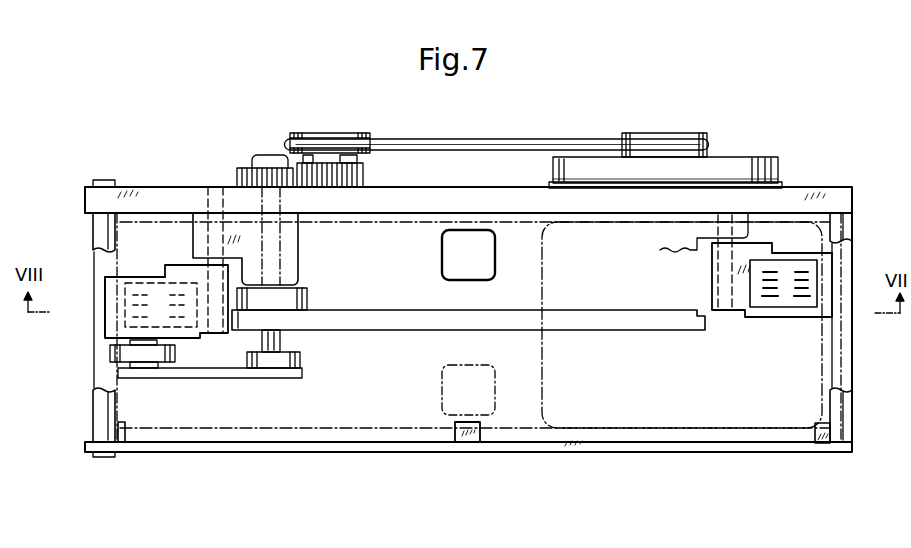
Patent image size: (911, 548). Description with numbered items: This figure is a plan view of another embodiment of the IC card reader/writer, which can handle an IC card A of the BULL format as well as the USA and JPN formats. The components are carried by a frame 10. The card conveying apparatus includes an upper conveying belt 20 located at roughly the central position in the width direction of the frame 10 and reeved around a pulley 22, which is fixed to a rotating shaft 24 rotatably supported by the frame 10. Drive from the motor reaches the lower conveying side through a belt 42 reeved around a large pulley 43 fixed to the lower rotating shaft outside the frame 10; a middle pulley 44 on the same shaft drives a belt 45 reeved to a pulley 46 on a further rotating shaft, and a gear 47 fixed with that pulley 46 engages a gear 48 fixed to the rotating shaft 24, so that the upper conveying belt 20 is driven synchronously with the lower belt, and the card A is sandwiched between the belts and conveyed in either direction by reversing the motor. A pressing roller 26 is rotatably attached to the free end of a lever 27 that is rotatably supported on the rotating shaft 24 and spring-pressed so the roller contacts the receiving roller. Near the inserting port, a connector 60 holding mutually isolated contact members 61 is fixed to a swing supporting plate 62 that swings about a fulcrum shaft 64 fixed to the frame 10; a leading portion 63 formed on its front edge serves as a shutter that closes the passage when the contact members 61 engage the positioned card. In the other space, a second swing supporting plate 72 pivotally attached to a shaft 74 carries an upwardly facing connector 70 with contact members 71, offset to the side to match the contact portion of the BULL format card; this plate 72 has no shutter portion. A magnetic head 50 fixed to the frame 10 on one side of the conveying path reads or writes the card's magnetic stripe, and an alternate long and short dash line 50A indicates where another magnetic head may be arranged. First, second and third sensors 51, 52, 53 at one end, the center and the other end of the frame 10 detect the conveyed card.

The frame 10 is at (872, 182).
The upper conveying belt 20 is at (606, 324).
The pulley 22 is at (309, 301).
The rotating shaft 24 is at (285, 259).
The pressing roller 26 is at (158, 368).
The lever 27 is at (238, 378).
The belt 42 is at (744, 160).
The large pulley 43 is at (784, 185).
The middle pulley 44 is at (689, 134).
The belt 45 is at (511, 140).
The pulley 46 is at (350, 133).
The gear 47 is at (365, 176).
The gear 48 is at (250, 168).
The magnetic head 50 is at (495, 256).
The another magnetic head 50A is at (442, 395).
The first sensor 51 is at (126, 438).
The second sensor 52 is at (455, 432).
The third sensor 53 is at (820, 428).
The connector 60 is at (186, 283).
The contact members 61 is at (145, 283).
The swing supporting plate 62 is at (125, 277).
The leading portion 63 is at (103, 292).
The fulcrum shaft 64 is at (208, 226).
The connector 70 is at (750, 288).
The contact members 71 is at (802, 298).
The swing supporting plate 72 is at (765, 318).
The shaft 74 is at (722, 273).
The IC card A is at (541, 400).